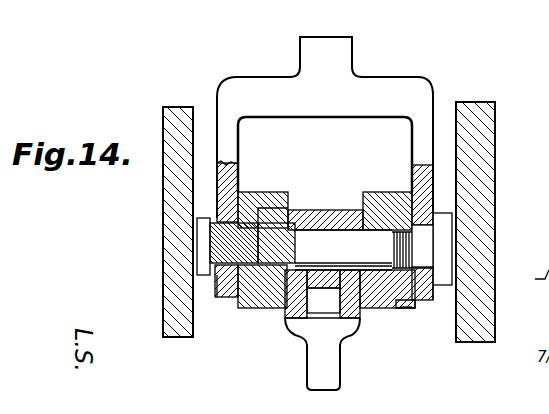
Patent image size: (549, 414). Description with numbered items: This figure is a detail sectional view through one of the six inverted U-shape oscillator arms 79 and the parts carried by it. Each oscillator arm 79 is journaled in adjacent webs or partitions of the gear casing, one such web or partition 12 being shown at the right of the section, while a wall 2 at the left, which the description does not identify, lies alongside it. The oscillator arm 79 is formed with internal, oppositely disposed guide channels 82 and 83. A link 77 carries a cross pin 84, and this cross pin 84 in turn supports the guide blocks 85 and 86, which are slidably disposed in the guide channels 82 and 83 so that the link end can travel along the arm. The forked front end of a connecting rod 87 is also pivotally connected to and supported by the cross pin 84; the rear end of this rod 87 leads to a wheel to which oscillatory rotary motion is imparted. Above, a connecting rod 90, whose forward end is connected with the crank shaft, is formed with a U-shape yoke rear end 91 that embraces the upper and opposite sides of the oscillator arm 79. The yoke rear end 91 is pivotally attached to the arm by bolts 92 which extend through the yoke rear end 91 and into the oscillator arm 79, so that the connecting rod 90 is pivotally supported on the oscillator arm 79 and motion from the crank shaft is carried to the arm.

The frame plate 2 is at (176, 338).
The web or partition 12 is at (495, 141).
The link 77 is at (330, 292).
The oscillator arm 79 is at (268, 310).
The guide channel 82 is at (235, 298).
The guide channel 83 is at (405, 306).
The cross pin 84 is at (332, 226).
The guide block 85 is at (272, 212).
The guide block 86 is at (375, 207).
The connecting rod 87 is at (341, 367).
The connecting rod 90 is at (345, 61).
The U-shape yoke rear end 91 is at (240, 152).
The bolt 92 is at (200, 247).